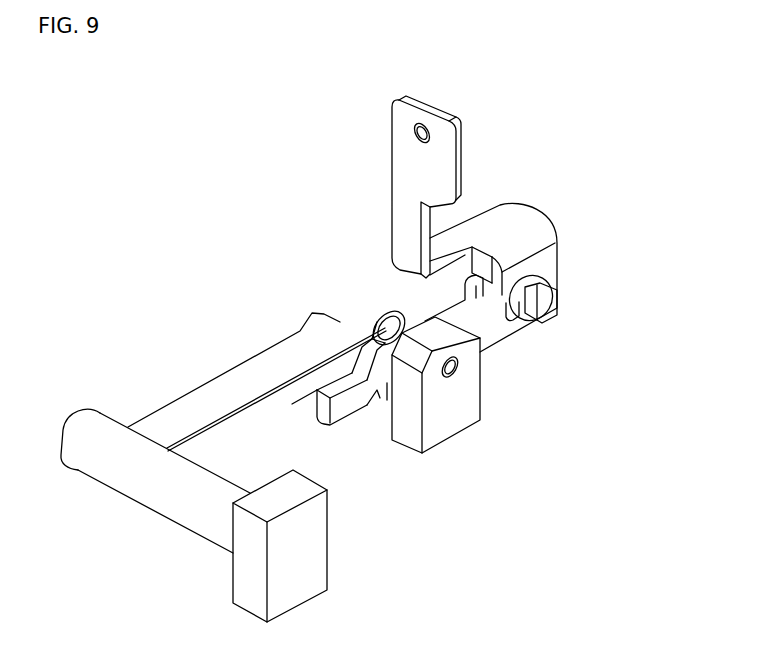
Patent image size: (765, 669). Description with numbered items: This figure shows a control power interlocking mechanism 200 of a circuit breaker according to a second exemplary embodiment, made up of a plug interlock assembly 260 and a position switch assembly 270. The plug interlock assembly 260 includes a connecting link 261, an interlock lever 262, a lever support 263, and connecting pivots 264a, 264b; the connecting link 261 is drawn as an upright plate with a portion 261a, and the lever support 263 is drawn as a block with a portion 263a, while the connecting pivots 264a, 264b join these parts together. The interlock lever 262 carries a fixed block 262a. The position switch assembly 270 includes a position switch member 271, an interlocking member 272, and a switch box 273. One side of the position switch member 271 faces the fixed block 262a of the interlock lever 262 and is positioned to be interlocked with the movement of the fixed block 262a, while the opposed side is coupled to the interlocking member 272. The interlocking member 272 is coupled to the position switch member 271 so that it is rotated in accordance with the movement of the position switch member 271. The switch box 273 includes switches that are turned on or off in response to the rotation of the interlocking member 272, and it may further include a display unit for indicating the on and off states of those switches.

The fixing device 200 is at (157, 97).
The plug interlock assembly 260 is at (378, 205).
The connecting link 261 is at (459, 162).
The slot 261a is at (513, 318).
The interlock lever 262 is at (369, 406).
The fixed block 262a is at (302, 388).
The lever support 263 is at (470, 403).
The hole 263a is at (452, 386).
The connecting pivot 264a is at (548, 303).
The connecting pivot 264b is at (370, 315).
The position switch assembly 270 is at (153, 393).
The position switch member 271 is at (230, 390).
The interlocking member 272 is at (142, 485).
The switch box 273 is at (298, 572).